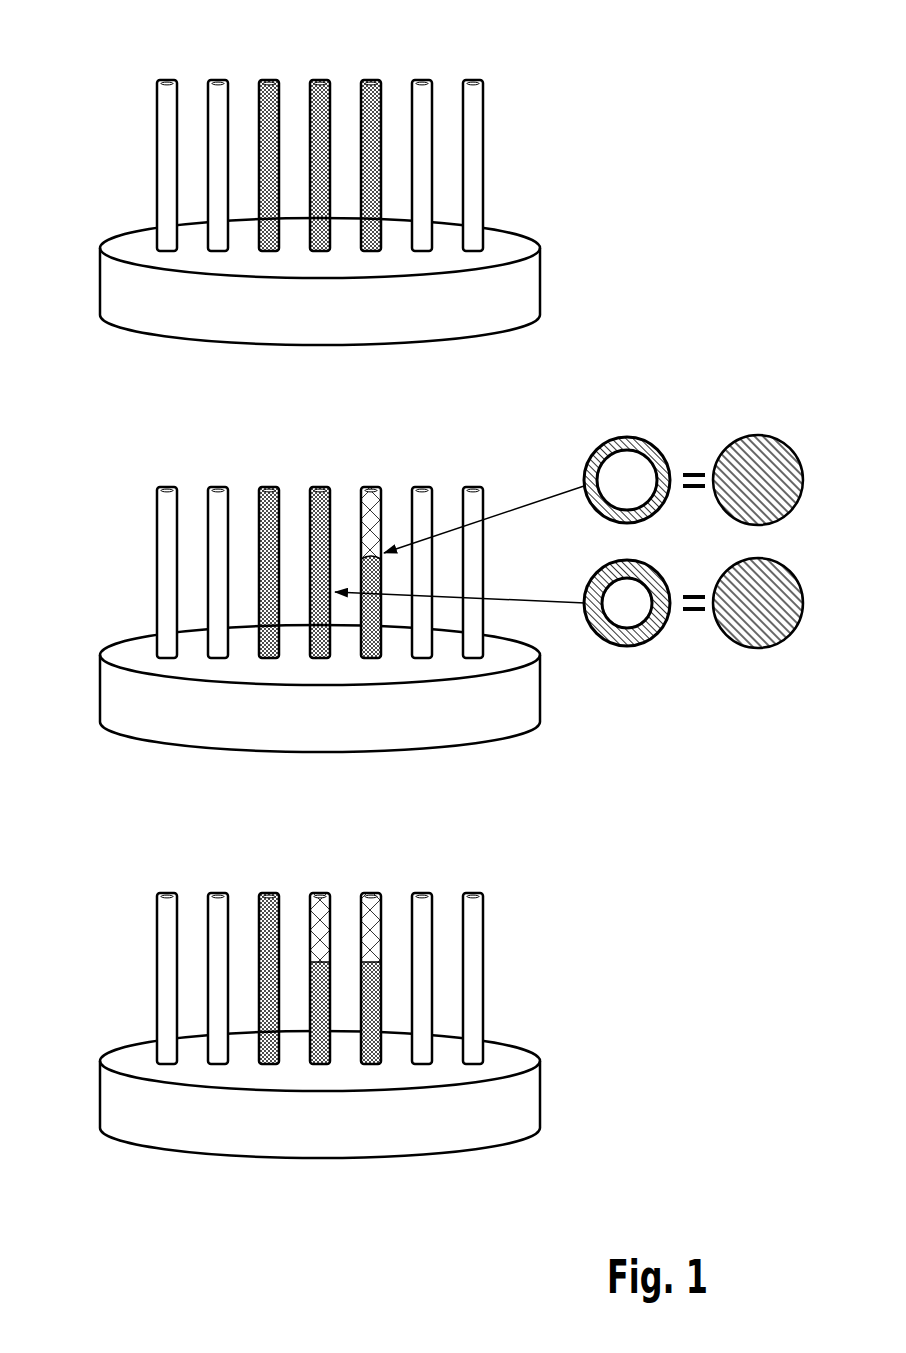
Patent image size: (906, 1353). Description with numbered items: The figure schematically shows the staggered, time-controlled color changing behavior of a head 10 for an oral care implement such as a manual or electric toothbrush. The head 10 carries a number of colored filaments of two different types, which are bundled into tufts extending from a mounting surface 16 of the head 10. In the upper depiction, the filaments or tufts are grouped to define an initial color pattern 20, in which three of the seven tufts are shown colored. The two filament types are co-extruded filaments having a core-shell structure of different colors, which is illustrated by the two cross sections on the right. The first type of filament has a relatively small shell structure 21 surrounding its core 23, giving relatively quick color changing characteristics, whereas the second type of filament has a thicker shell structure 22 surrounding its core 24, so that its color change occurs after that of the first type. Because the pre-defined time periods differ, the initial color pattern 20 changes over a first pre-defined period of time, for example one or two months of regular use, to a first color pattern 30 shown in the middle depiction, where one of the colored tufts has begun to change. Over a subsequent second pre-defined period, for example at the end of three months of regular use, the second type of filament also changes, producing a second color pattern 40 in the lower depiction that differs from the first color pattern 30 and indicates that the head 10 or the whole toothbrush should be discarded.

The head 10 is at (352, 172).
The mounting surface 16 is at (515, 1115).
The initial color pattern 20 is at (352, 172).
The shell structure 21 is at (640, 449).
The shell structure 22 is at (645, 634).
The core 23 is at (624, 458).
The core 24 is at (623, 607).
The first color pattern 30 is at (150, 620).
The second color pattern 40 is at (380, 1025).